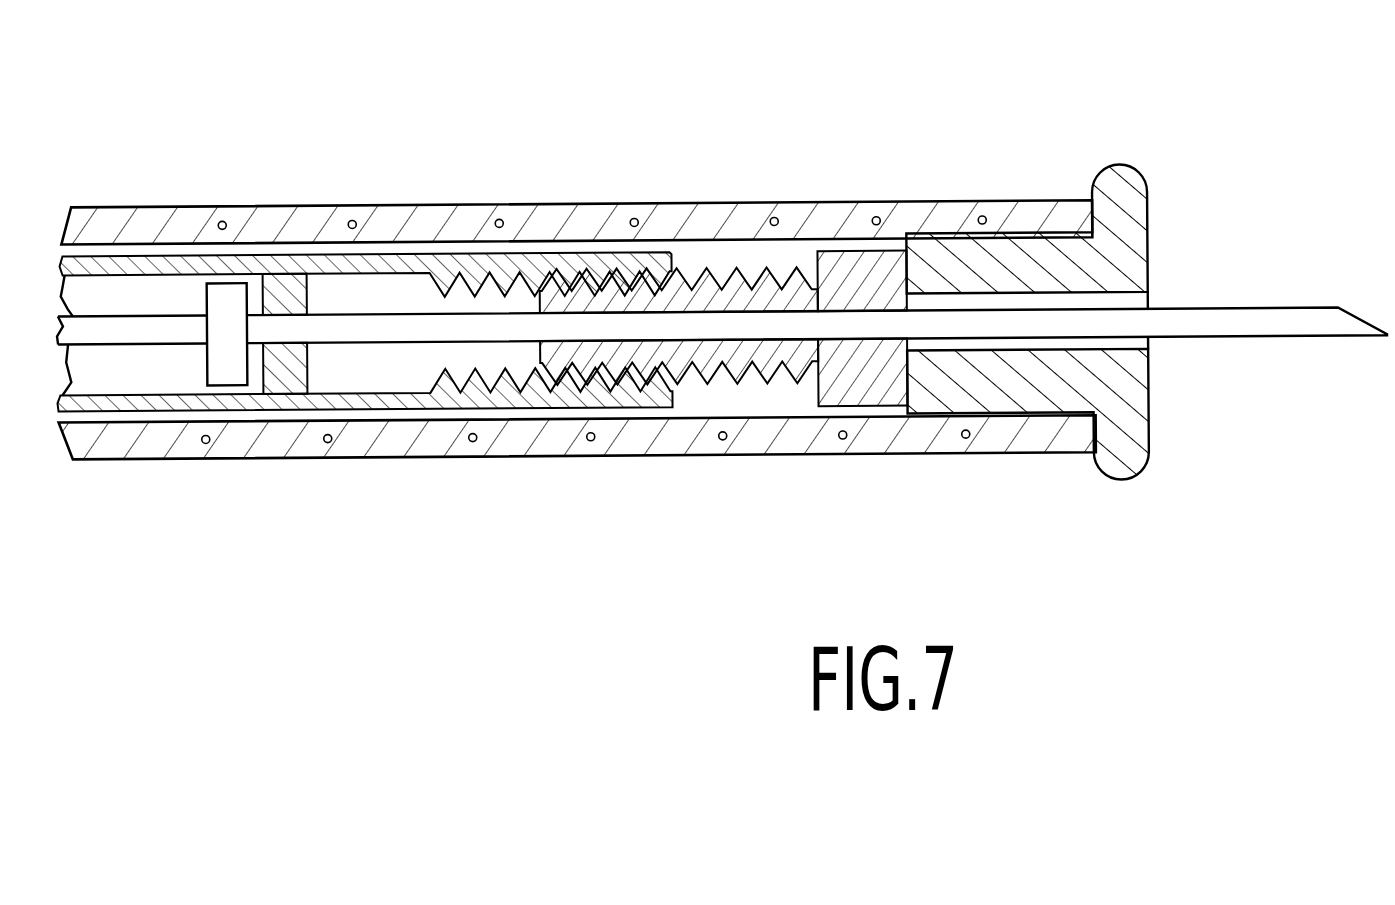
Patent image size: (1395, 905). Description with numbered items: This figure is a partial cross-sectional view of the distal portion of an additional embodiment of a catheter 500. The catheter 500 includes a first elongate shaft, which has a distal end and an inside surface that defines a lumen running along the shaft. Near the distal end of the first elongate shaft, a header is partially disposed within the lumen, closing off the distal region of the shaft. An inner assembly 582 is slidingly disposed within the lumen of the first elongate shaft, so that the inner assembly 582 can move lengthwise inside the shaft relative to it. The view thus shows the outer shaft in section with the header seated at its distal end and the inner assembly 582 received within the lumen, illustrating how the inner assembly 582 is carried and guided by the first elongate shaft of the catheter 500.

The catheter 500 is at (493, 625).
The inner assembly 582 is at (695, 256).